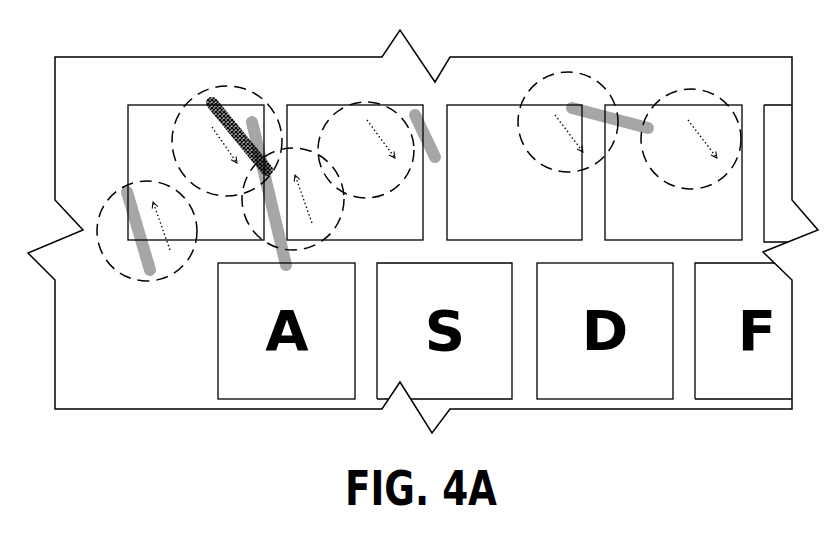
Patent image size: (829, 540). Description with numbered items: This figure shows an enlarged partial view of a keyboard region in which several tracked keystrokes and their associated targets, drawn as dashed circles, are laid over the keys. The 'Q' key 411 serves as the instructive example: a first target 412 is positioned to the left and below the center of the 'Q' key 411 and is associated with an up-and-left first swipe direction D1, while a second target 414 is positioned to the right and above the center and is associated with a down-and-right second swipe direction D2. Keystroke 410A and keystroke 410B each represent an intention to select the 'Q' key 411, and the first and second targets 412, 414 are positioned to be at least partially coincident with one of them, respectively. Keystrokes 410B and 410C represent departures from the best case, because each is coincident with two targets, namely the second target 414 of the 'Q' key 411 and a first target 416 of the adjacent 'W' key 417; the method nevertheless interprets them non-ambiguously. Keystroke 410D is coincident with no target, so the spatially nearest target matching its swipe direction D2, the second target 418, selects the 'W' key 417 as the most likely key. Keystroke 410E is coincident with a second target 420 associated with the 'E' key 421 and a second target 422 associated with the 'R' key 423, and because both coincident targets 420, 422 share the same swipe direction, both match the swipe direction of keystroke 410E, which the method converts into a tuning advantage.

The 'Q' key 411 is at (128, 126).
The second target 414 is at (237, 88).
The keystroke 410B is at (218, 103).
The second target 418 is at (364, 101).
The keystroke 410D is at (433, 118).
The second target 420 is at (527, 100).
The keystroke 410E is at (593, 106).
The second target 422 is at (705, 92).
The second swipe direction D2 is at (212, 131).
The keystroke 410A is at (138, 204).
The first target 412 is at (140, 282).
The first swipe direction D1 is at (172, 238).
The first target 416 is at (266, 242).
The keystroke 410C is at (290, 250).
The 'W' key 417 is at (367, 242).
The 'E' key 421 is at (517, 241).
The 'R' key 423 is at (675, 242).